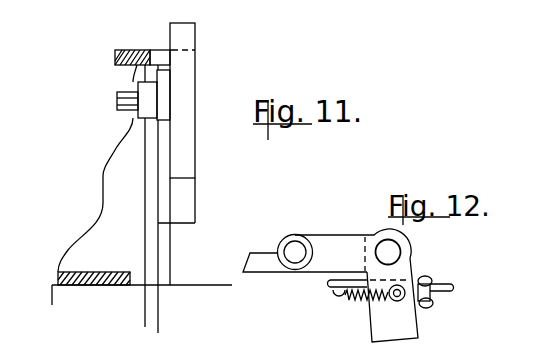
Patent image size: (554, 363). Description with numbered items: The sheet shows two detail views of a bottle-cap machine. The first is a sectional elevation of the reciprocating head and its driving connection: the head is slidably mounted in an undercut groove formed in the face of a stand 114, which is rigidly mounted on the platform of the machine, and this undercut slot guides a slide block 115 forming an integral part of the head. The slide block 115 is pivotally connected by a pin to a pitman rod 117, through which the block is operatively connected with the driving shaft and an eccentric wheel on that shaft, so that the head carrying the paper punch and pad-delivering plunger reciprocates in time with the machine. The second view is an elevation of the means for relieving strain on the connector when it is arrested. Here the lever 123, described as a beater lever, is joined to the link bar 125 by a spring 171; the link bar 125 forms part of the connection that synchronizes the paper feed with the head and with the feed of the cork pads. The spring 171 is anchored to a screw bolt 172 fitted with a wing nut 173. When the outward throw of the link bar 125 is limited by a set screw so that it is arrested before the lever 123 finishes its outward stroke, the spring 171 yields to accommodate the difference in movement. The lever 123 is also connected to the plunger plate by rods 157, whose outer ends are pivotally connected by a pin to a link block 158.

In FIG. 11, the stand 114 is at (112, 181).
In FIG. 11, the slide block 115 is at (188, 33).
In FIG. 11, the pitman rod 117 is at (147, 232).
In FIG. 12, the lever 123 is at (410, 323).
In FIG. 12, the link bar 125 is at (333, 289).
In FIG. 12, the rods 157 is at (257, 262).
In FIG. 12, the link block 158 is at (332, 246).
In FIG. 12, the spring 171 is at (362, 302).
In FIG. 12, the screw bolt 172 is at (397, 302).
In FIG. 12, the wing nut 173 is at (428, 278).